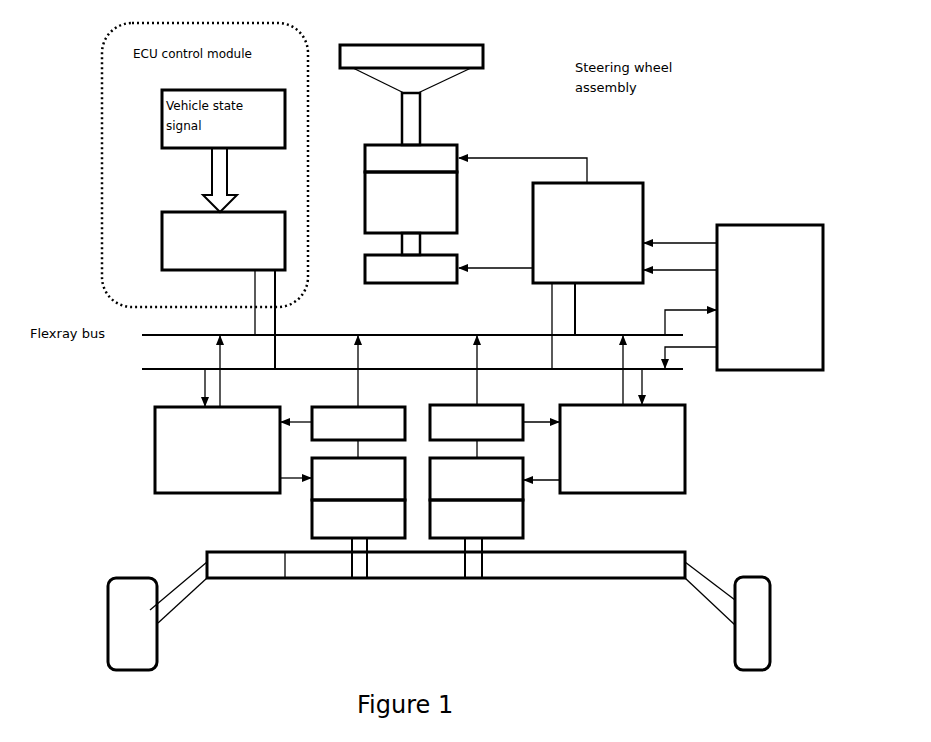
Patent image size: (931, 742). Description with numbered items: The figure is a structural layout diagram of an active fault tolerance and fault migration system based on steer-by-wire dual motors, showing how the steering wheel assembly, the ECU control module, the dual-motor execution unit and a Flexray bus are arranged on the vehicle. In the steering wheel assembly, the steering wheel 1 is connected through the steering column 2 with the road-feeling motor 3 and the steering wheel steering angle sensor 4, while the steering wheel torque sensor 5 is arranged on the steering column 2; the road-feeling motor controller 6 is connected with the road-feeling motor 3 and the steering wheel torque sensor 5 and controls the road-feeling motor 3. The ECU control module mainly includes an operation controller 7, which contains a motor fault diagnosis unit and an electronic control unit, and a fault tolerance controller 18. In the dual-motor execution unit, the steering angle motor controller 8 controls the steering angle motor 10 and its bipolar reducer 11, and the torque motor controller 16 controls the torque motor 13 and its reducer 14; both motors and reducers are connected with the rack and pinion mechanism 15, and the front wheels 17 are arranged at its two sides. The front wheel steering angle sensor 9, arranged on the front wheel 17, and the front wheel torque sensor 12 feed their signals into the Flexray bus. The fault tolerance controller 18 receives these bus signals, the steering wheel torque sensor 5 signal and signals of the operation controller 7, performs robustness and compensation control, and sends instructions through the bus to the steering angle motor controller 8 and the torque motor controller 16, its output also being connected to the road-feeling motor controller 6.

The steering wheel 1 is at (411, 69).
The steering column 2 is at (411, 119).
The road-feeling motor 3 is at (411, 159).
The steering wheel steering angle sensor 4 is at (411, 213).
The steering wheel torque sensor 5 is at (411, 269).
The road-feeling motor controller 6 is at (551, 263).
The operation controller 7 is at (223, 290).
The steering angle motor controller 8 is at (217, 414).
The front wheel steering angle sensor 9 is at (343, 397).
The steering angle motor 10 is at (342, 479).
The bipolar reducer 11 is at (358, 539).
The front wheel torque sensor 12 is at (494, 397).
The torque motor 13 is at (495, 479).
The reducer 14 is at (476, 539).
The rack and pinion mechanism 15 is at (446, 567).
The torque motor controller 16 is at (622, 414).
The front wheel 17 is at (439, 616).
The fault tolerance controller 18 is at (733, 297).